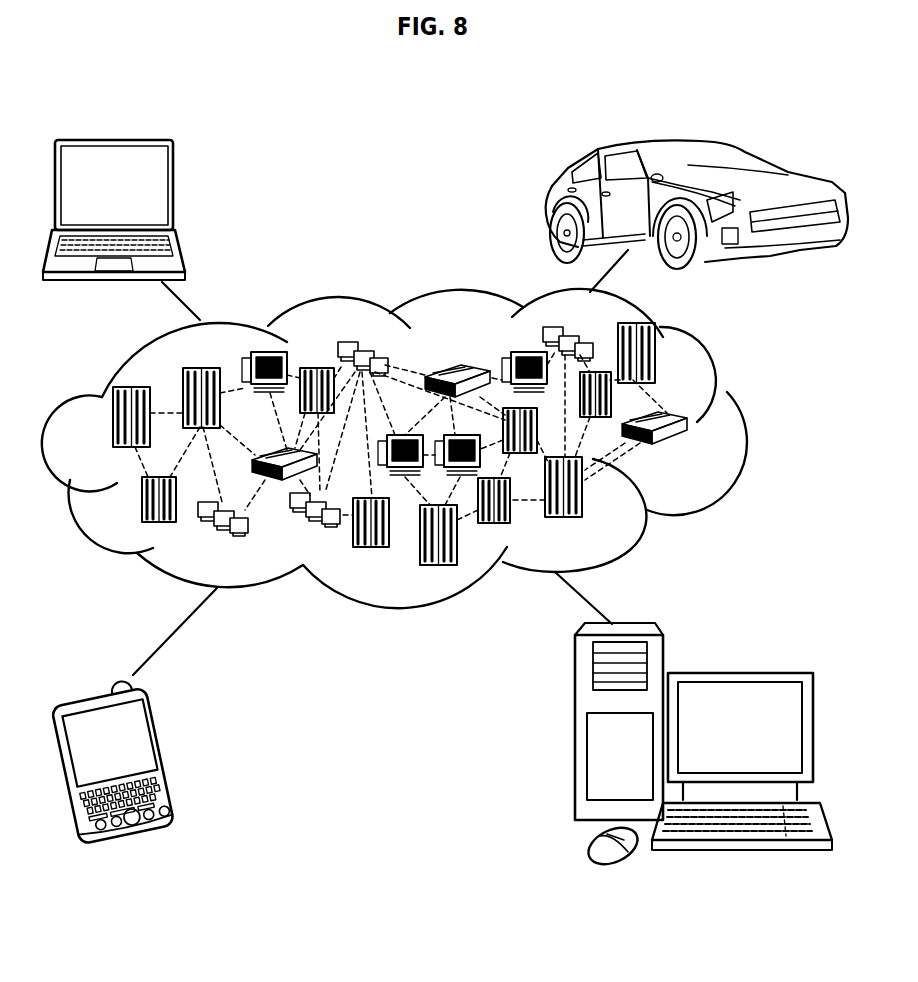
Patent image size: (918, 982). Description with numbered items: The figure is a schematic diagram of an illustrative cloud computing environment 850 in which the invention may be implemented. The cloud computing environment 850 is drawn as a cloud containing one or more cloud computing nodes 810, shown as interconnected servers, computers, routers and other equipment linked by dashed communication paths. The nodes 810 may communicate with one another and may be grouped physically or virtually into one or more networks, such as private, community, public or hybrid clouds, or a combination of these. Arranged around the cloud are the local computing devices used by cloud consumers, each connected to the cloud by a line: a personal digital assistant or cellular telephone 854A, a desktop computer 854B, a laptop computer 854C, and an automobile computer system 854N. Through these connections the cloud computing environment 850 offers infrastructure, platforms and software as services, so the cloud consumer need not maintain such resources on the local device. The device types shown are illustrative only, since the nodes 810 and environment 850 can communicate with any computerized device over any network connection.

The laptop computer 854C is at (173, 192).
The automobile computer system 854N is at (548, 207).
The cloud computing environment 850 is at (740, 424).
The cloud computing nodes 810 is at (697, 455).
The personal digital assistant (PDA) or cellular telephone 854A is at (163, 755).
The desktop computer 854B is at (737, 673).